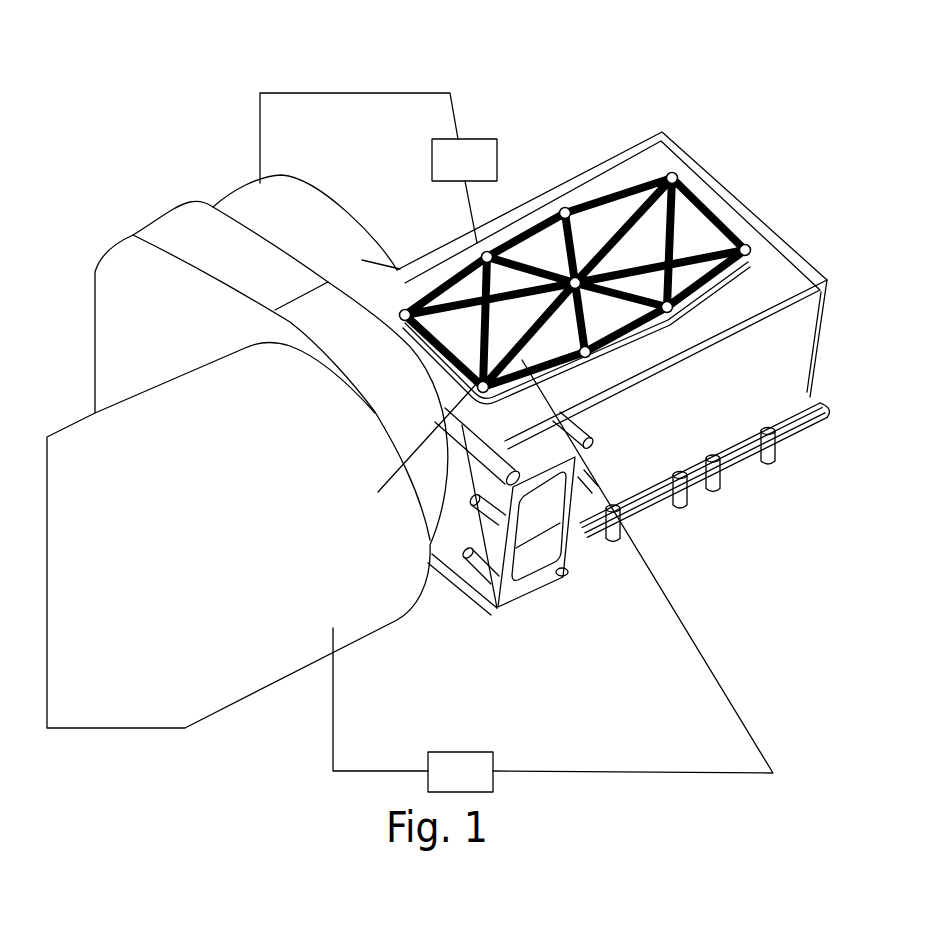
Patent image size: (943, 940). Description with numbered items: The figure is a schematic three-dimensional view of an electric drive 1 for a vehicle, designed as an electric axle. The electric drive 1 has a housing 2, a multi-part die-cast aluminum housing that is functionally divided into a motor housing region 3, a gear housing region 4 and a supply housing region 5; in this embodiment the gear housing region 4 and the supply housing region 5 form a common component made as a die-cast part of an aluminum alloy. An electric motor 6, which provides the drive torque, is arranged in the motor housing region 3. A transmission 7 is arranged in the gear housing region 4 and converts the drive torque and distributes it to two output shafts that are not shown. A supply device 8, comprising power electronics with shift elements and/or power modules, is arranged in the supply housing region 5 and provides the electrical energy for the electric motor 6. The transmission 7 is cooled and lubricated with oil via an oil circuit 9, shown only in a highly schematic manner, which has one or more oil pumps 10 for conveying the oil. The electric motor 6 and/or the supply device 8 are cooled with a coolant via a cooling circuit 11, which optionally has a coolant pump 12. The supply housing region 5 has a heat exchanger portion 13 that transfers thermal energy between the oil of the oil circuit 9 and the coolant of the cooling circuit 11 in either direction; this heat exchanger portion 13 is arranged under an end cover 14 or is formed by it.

The electric drive 1 is at (438, 407).
The housing 2 is at (438, 417).
The motor housing region 3 is at (247, 464).
The gear housing region 4 is at (306, 222).
The supply housing region 5 is at (613, 360).
The electric motor 6 is at (178, 673).
The transmission 7 is at (310, 225).
The supply device 8 is at (613, 360).
The oil circuit 9 is at (305, 93).
The oil pump 10 is at (478, 174).
The cooling circuit 11 is at (602, 772).
The coolant pump 12 is at (475, 783).
The heat exchanger portion 13 is at (716, 179).
The end cover 14 is at (703, 230).